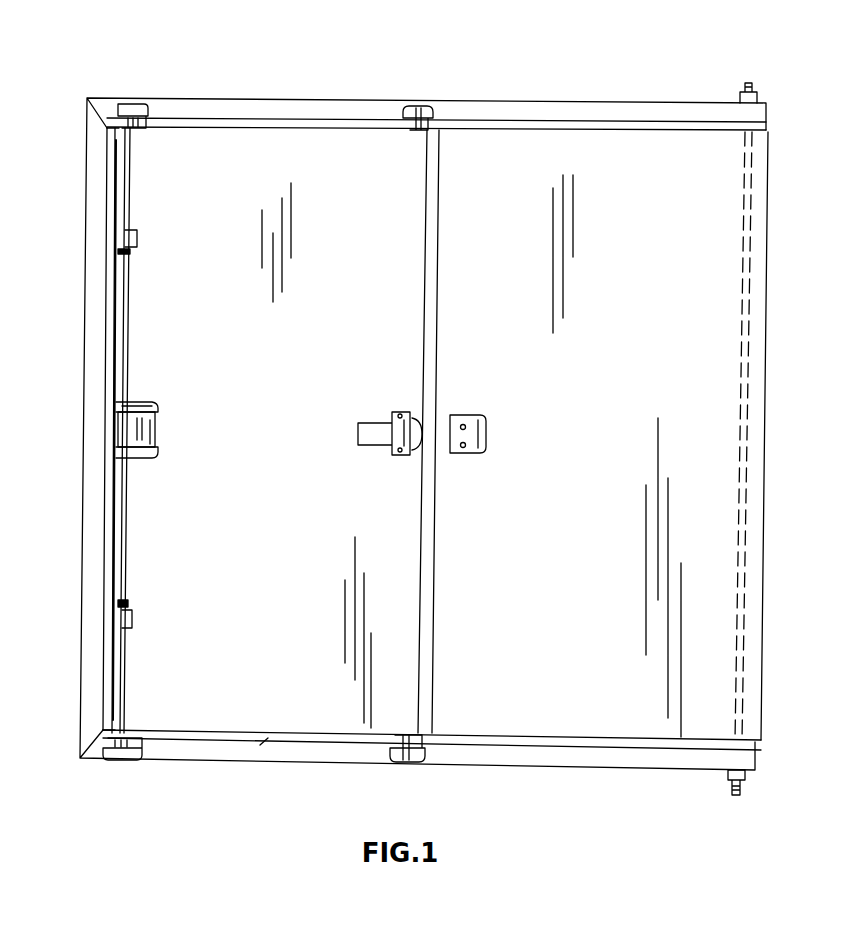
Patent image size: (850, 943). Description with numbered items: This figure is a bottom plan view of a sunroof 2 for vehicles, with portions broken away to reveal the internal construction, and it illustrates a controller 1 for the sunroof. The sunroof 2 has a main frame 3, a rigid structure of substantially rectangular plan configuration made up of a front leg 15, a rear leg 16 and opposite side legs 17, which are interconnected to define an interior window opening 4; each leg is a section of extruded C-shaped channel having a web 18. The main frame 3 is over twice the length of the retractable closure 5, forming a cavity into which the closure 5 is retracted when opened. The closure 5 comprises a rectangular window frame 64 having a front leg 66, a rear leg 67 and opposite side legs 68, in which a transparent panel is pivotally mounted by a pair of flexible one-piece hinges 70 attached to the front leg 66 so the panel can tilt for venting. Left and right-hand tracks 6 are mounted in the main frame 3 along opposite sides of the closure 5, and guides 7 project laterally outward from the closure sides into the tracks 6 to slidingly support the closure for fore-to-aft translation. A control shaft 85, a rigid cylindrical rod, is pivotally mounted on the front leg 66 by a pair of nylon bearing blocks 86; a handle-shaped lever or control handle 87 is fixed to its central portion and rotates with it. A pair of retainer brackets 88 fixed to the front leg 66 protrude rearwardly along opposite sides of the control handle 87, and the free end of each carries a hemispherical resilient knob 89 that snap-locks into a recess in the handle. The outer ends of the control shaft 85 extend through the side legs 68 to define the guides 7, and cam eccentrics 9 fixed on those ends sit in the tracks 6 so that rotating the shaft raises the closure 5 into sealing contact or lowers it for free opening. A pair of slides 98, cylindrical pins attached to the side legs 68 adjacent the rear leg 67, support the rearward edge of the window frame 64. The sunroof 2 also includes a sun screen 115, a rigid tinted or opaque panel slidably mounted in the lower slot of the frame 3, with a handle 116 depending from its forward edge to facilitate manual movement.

The controller 1 is at (150, 95).
The sunroof 2 is at (768, 103).
The main frame 3 is at (597, 110).
The window opening 4 is at (300, 130).
The retractable closure 5 is at (318, 330).
The tracks 6 is at (144, 122).
The guides 7 is at (138, 101).
The cam eccentrics 9 is at (106, 126).
The front leg 15 is at (92, 387).
The rear leg 16 is at (750, 356).
The side legs 17 is at (460, 104).
The web 18 is at (318, 756).
The window frame 64 is at (267, 740).
The front leg 66 is at (124, 494).
The rear leg 67 is at (426, 346).
The side legs 68 is at (342, 128).
The hinges 70 is at (138, 233).
The control shaft 85 is at (124, 544).
The bearing blocks 86 is at (130, 251).
The control handle 87 is at (157, 435).
The retainer brackets 88 is at (146, 404).
The knobs 89 is at (160, 414).
The slides 98 is at (402, 114).
The sun screen 115 is at (700, 554).
The handle 116 is at (480, 416).